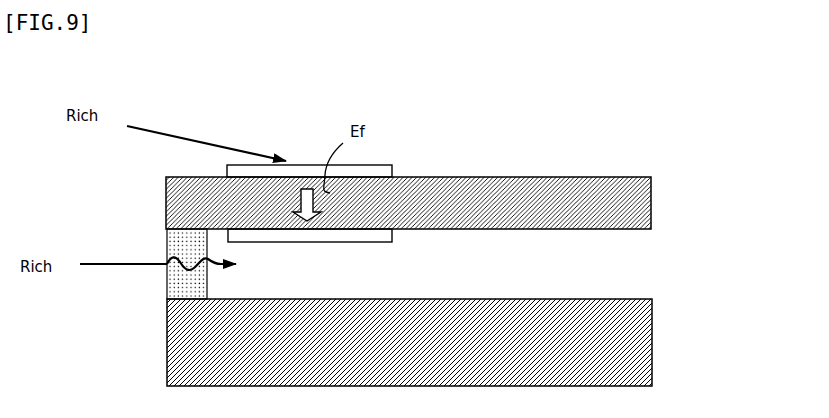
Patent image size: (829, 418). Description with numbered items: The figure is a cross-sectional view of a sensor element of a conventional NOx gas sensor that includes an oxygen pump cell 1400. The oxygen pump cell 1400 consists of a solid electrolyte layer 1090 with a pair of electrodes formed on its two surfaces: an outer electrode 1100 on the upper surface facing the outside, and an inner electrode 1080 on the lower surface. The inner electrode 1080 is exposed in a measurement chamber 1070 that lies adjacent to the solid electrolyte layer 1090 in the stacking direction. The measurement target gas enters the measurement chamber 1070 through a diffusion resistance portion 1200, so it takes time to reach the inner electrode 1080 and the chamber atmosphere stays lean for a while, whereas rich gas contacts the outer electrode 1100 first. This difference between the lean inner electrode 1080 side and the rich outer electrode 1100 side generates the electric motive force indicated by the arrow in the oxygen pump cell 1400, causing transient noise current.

The outer electrode 1100 is at (390, 160).
The solid electrolyte layer 1090 is at (642, 203).
The inner electrode 1080 is at (395, 243).
The oxygen pump cell 1400 is at (491, 201).
The measurement chamber 1070 is at (498, 286).
The diffusion resistance portion 1200 is at (165, 290).